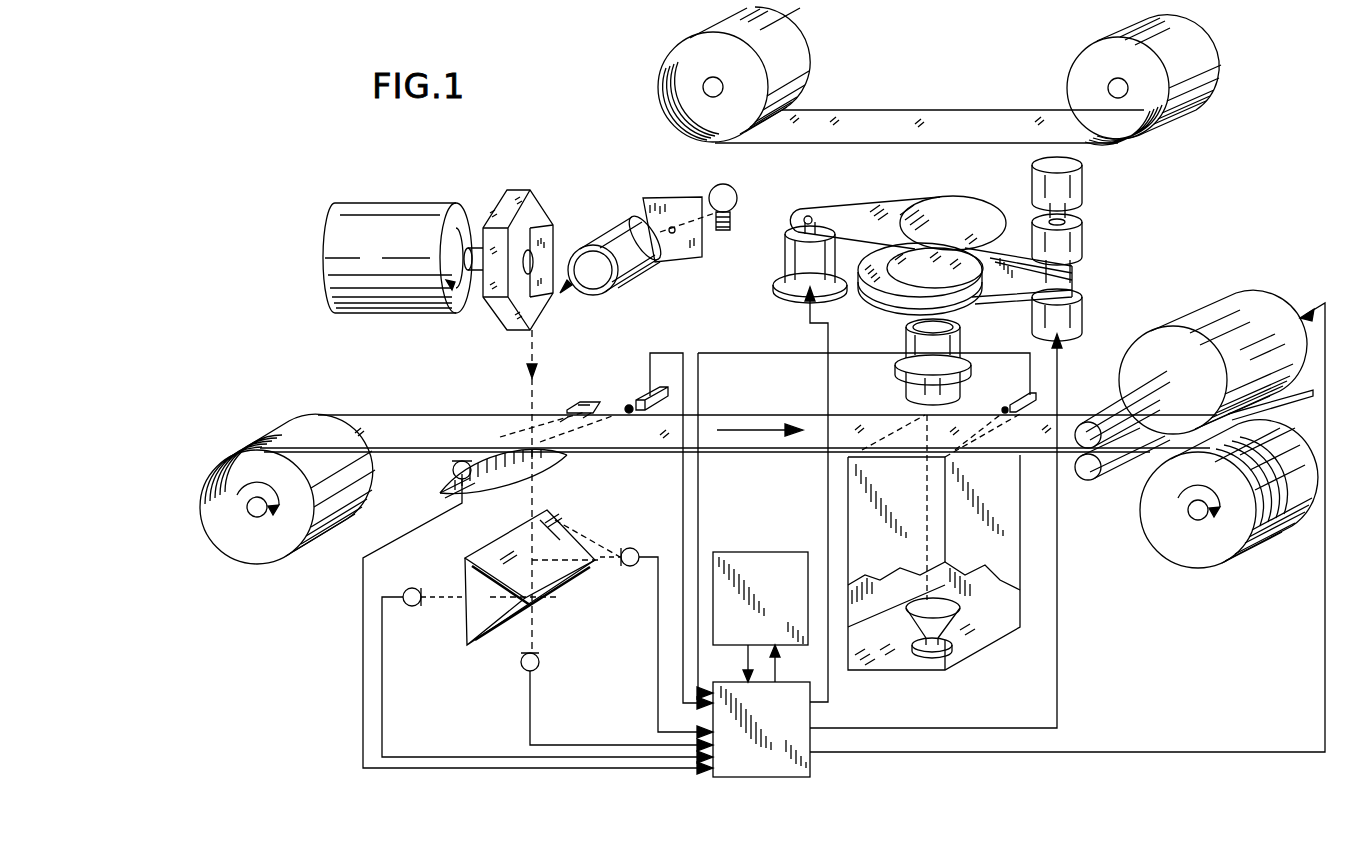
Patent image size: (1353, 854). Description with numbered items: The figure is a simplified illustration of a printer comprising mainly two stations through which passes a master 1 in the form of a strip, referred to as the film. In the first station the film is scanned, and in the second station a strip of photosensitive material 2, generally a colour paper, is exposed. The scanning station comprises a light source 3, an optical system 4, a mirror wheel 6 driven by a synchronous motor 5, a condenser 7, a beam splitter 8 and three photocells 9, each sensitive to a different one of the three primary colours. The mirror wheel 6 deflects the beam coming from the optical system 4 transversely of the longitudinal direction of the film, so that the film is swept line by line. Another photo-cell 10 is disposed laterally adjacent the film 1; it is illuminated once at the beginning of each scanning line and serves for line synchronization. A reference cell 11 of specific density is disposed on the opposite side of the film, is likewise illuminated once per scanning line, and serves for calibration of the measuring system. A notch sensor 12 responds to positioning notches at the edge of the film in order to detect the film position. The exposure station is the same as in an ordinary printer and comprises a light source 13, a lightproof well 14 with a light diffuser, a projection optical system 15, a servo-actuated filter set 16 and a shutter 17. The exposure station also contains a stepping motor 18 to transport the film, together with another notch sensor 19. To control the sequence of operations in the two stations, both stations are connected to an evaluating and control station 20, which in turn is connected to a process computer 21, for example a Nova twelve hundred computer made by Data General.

The master 1 is at (389, 423).
The strip of photosensitive material 2 is at (785, 143).
The light source 3 is at (737, 207).
The optical system 4 is at (606, 290).
The synchronous motor 5 is at (393, 213).
The mirror wheel 6 is at (542, 214).
The condenser 7 is at (552, 460).
The beam splitter 8 is at (565, 530).
The photocells 9 is at (633, 547).
The photo-cell 10 is at (452, 471).
The reference cell 11 is at (576, 402).
The notch sensor 12 is at (649, 393).
The light source 13 is at (908, 624).
The lightproof well 14 is at (1010, 530).
The projection optical system 15 is at (905, 382).
The servo-actuated filter set 16 is at (985, 300).
The shutter 17 is at (965, 207).
The stepping motor 18 is at (1245, 302).
The notch sensor 19 is at (1036, 400).
The evaluating and control station 20 is at (793, 686).
The process computer 21 is at (748, 557).